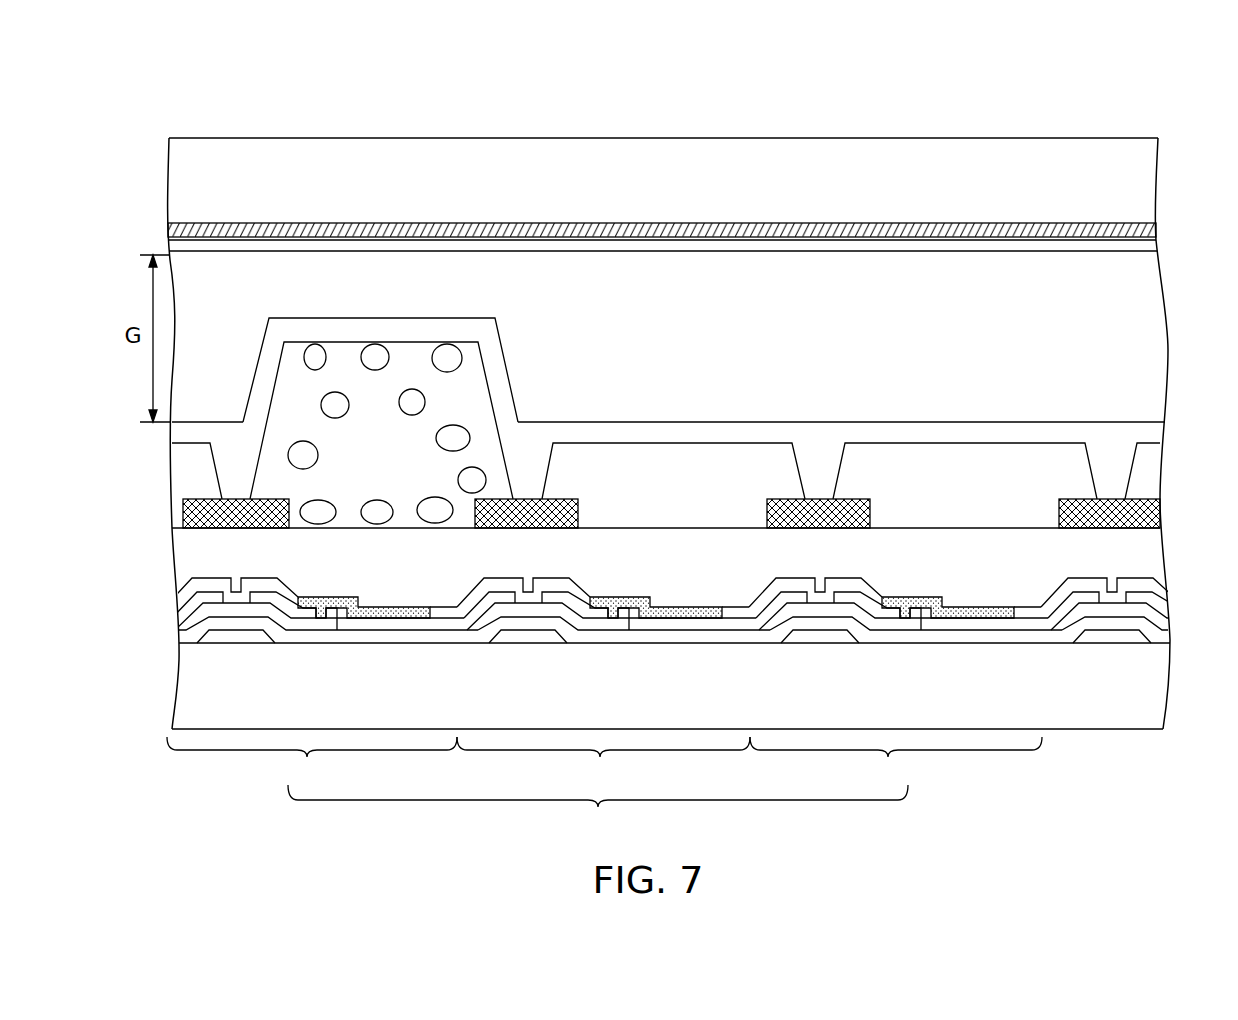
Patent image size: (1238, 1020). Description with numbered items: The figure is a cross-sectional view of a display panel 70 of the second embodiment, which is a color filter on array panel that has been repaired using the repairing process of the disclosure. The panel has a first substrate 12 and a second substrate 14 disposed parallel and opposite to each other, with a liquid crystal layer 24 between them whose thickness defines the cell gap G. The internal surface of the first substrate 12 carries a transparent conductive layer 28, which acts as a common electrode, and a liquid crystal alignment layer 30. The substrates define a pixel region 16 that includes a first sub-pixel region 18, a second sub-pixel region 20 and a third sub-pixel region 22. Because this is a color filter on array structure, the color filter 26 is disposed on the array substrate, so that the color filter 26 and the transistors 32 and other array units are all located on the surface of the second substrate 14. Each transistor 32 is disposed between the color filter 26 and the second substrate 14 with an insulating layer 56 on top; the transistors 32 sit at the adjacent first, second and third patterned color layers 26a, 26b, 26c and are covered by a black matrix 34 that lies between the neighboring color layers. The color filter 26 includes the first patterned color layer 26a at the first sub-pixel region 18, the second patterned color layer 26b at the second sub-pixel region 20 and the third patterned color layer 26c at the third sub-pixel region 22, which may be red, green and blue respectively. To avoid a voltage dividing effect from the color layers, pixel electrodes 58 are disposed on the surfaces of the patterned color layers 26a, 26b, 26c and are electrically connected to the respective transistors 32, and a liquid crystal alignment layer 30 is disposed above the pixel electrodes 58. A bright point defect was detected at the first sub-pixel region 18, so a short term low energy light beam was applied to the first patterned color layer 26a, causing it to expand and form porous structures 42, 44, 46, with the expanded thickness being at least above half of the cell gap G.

The first substrate 12 is at (645, 199).
The second substrate 14 is at (646, 692).
The pixel region 16 is at (598, 813).
The first sub-pixel region 18 is at (312, 764).
The second sub-pixel region 20 is at (603, 764).
The third sub-pixel region 22 is at (896, 764).
The liquid crystal layer 24 is at (1150, 332).
The color filter 26 is at (165, 442).
The first patterned color layer 26a is at (357, 461).
The second patterned color layer 26b is at (654, 501).
The third patterned color layer 26c is at (944, 501).
The transparent conductive layer 28 is at (1165, 227).
The liquid crystal alignment layer 30 is at (1152, 247).
The transistor 32 is at (818, 646).
The black matrix 34 is at (1155, 513).
The porous structure 42 is at (462, 437).
The porous structure 44 is at (447, 355).
The porous structure 46 is at (435, 508).
The insulating layer 56 is at (1150, 553).
The pixel electrode 58 is at (978, 607).
The display panel 70 is at (1150, 118).